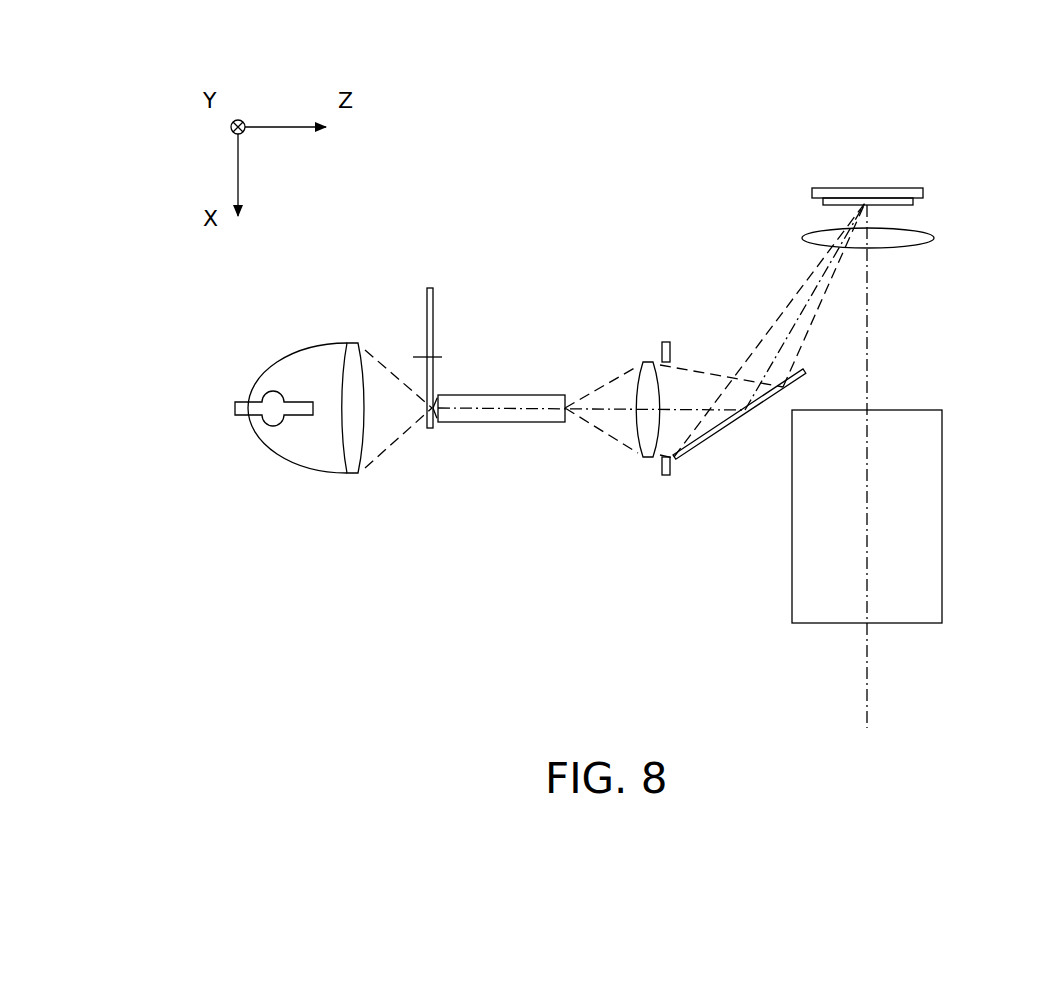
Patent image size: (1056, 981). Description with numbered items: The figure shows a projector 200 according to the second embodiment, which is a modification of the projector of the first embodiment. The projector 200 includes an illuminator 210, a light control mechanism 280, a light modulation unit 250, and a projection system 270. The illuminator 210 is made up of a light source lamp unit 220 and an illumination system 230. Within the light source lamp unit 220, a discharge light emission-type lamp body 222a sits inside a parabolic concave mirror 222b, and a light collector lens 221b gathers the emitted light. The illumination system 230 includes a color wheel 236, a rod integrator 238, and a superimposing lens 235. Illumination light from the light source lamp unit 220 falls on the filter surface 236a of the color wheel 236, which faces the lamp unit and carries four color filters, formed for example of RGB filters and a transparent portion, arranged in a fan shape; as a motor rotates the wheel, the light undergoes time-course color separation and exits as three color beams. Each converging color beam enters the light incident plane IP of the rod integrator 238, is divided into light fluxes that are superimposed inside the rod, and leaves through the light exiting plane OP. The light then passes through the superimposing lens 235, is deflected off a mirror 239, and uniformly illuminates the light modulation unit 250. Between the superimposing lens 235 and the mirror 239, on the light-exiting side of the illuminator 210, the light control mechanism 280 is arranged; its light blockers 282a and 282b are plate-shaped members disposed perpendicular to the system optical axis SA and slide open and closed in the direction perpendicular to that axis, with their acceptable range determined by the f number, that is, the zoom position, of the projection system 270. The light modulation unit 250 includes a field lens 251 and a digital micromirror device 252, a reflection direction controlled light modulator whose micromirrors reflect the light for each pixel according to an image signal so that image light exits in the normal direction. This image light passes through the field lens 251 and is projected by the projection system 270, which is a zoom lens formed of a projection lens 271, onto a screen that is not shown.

The projector 200 is at (1022, 90).
The illuminator 210 is at (320, 533).
The light source lamp unit 220 is at (285, 476).
The light collector lens 221b is at (353, 474).
The lamp body 222a is at (268, 400).
The parabolic concave mirror 222b is at (303, 347).
The illumination system 230 is at (444, 515).
The superimposing lens 235 is at (648, 460).
The color wheel 236 is at (453, 320).
The filter surface 236a is at (431, 288).
The rod integrator 238 is at (504, 423).
The mirror 239 is at (712, 437).
The light modulation unit 250 is at (797, 203).
The field lens 251 is at (802, 239).
The digital micromirror device 252 is at (915, 204).
The projection system 270 is at (770, 603).
The projection lens 271 is at (935, 537).
The light control mechanism 280 is at (655, 505).
The light blocker 282a is at (664, 342).
The light blocker 282b is at (667, 478).
The light incident plane IP is at (438, 395).
The light exiting plane OP is at (565, 395).
The system optical axis SA is at (683, 407).